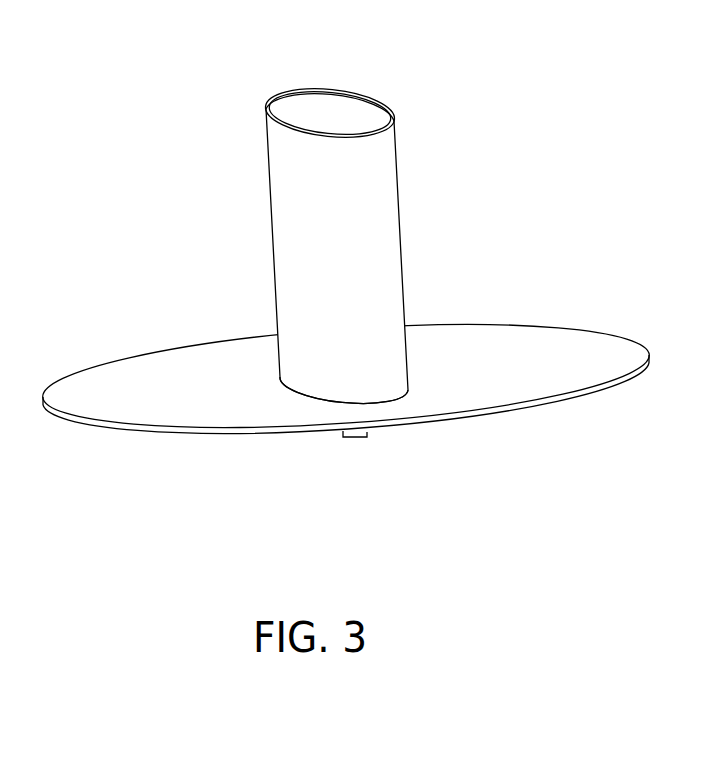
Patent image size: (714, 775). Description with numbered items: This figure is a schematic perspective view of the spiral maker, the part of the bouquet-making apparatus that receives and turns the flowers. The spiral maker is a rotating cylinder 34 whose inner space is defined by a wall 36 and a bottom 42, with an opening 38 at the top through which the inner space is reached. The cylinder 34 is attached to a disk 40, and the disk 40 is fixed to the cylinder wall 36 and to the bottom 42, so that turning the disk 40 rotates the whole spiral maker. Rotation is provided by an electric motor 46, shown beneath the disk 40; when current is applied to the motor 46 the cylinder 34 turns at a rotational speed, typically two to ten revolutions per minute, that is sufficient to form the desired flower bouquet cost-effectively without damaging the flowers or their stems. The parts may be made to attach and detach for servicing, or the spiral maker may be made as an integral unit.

The cylinder 34 is at (274, 250).
The wall 36 is at (280, 89).
The opening 38 is at (335, 115).
The disk 40 is at (553, 357).
The bottom 42 is at (397, 396).
The electric motor 46 is at (358, 438).